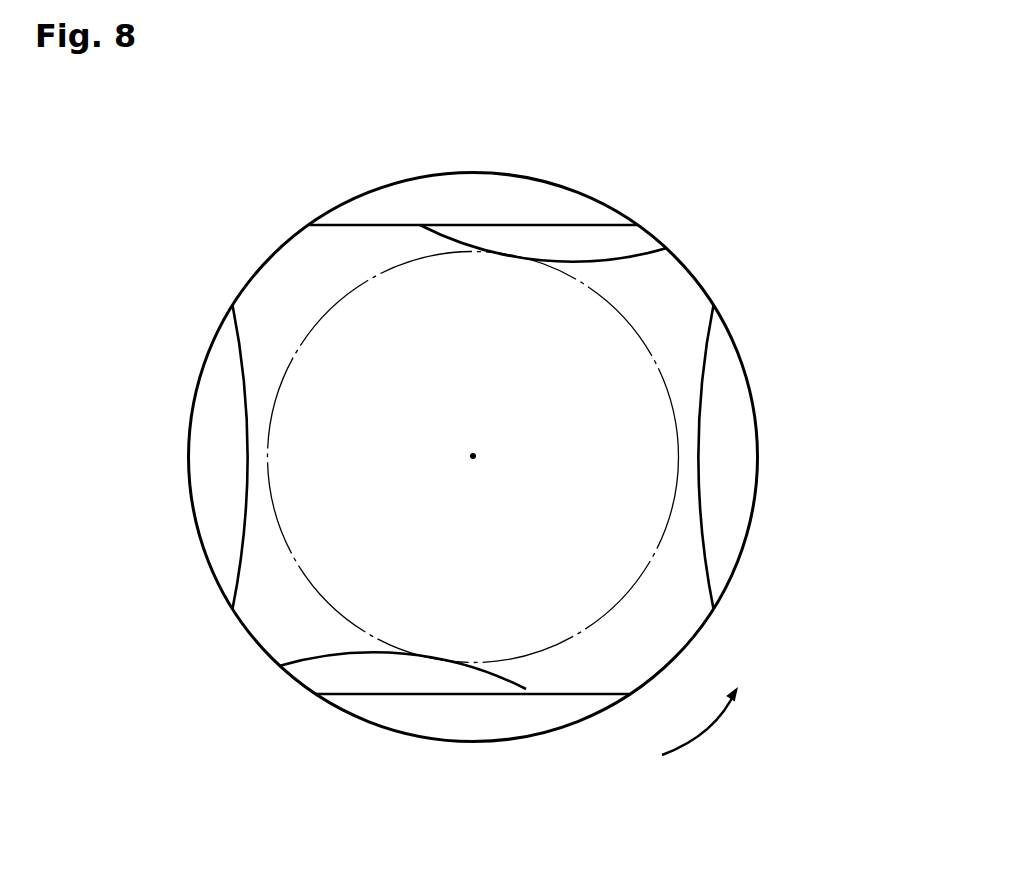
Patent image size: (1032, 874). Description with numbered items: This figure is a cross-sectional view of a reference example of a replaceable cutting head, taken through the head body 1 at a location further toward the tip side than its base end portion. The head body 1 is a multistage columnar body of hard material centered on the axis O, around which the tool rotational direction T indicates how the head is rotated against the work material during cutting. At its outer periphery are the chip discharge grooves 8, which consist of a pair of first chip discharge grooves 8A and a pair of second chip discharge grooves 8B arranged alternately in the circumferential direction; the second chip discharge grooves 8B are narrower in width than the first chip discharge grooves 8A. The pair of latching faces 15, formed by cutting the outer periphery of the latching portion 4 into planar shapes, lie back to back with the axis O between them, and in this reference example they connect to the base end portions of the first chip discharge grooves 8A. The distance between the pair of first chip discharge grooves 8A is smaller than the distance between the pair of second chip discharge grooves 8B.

The head body 1 is at (777, 184).
The latching portion 4 is at (695, 186).
The chip discharge grooves 8 is at (482, 459).
The first chip discharge groove 8A is at (486, 238).
The second chip discharge groove 8B is at (240, 450).
The latching faces 15 is at (540, 224).
The axis O is at (478, 453).
The tool rotational direction T is at (700, 724).